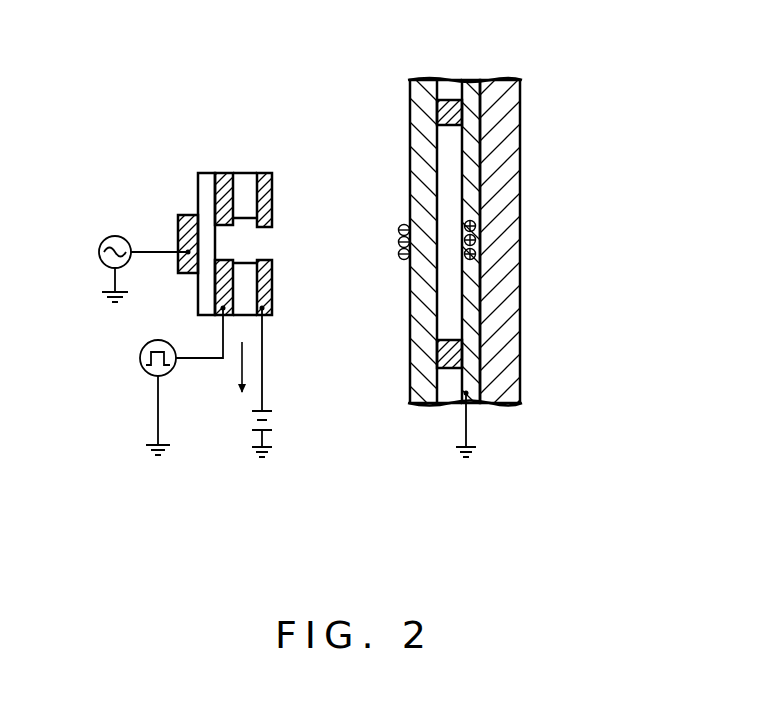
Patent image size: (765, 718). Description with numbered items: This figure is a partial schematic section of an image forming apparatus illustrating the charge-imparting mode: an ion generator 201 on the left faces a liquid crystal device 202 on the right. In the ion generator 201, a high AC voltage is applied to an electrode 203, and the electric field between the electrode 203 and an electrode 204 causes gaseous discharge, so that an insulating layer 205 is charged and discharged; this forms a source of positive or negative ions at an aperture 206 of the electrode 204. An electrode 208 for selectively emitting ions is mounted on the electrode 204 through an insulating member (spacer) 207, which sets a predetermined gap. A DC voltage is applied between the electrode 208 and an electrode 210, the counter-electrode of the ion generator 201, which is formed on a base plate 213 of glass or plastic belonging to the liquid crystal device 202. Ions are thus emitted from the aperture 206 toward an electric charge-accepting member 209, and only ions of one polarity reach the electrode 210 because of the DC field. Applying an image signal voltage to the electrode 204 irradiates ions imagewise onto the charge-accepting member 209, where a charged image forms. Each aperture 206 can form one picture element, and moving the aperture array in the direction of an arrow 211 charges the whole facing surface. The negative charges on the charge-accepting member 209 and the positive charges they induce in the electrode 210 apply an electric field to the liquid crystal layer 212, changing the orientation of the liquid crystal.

The ion generator 201 is at (130, 210).
The liquid crystal device 202 is at (548, 403).
The electrode 203 is at (190, 213).
The electrode 204 is at (225, 180).
The insulating layer 205 is at (208, 180).
The aperture 206 is at (240, 243).
The insulating member (spacer) 207 is at (247, 180).
The electrode 208 is at (272, 173).
The charge-accepting member 209 is at (418, 362).
The electrode 210 is at (475, 82).
The arrow 211 is at (237, 377).
The liquid crystal layer 212 is at (448, 170).
The base plate 213 is at (503, 85).